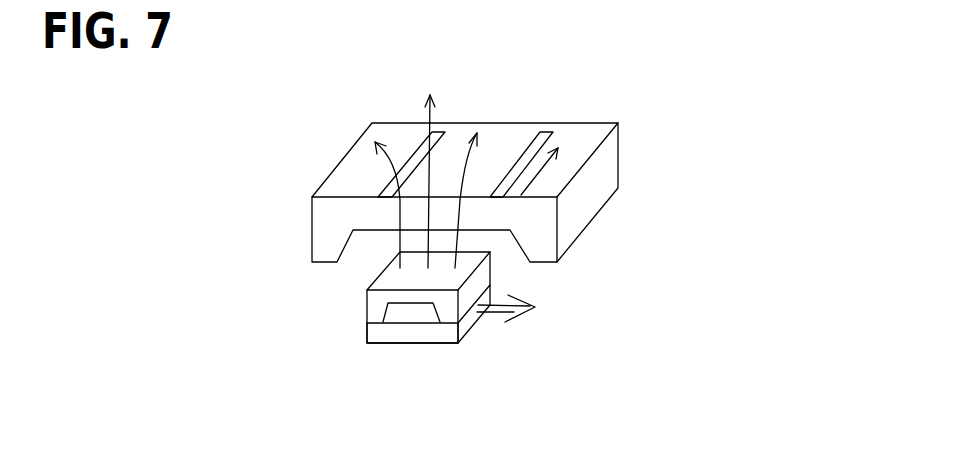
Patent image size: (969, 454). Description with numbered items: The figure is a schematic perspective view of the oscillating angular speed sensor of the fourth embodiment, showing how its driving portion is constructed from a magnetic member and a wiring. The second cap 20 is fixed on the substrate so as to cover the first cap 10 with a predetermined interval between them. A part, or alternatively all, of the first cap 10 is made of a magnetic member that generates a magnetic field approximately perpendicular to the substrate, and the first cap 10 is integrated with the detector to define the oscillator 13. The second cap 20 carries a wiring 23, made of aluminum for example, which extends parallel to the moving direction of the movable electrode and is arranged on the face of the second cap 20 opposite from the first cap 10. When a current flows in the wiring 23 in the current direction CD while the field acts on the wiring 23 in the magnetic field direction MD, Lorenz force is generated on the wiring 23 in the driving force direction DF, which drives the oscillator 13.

The second cap 20 is at (583, 135).
The wiring 23 is at (417, 148).
The first cap 10 is at (448, 310).
The oscillator 13 is at (388, 347).
The current direction CD is at (527, 181).
The magnetic field direction MD is at (398, 238).
The driving force direction DF is at (524, 309).